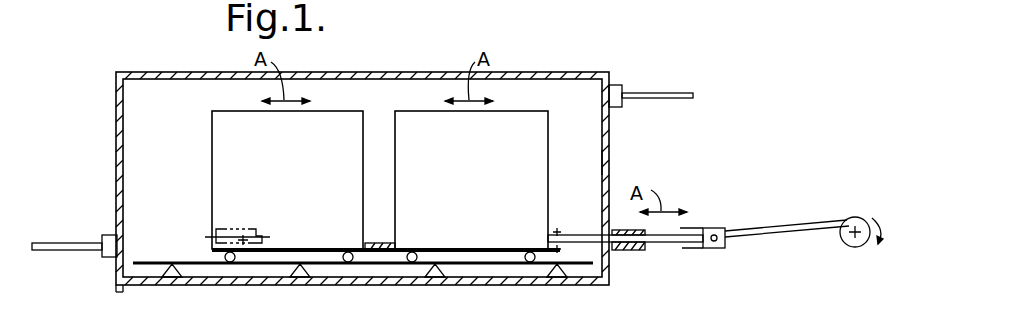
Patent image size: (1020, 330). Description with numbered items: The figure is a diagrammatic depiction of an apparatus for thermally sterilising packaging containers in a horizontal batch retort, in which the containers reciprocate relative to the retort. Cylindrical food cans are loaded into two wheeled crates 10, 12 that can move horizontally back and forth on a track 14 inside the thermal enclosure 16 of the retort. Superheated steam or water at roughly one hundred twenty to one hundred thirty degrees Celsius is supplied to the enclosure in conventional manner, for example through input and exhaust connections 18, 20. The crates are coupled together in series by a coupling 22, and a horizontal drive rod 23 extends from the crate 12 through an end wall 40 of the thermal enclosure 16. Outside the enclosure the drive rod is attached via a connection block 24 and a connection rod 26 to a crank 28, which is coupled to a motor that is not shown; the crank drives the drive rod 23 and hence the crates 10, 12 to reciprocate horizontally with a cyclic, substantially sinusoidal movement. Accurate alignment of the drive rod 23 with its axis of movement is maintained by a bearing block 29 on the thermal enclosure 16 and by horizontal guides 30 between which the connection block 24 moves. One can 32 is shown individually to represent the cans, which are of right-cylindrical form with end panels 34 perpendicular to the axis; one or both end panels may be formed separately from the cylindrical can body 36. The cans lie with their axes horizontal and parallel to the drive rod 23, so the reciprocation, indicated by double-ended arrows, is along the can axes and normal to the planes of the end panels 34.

The wheeled crate 10 is at (302, 166).
The wheeled crate 12 is at (484, 166).
The track 14 is at (387, 266).
The thermal enclosure 16 is at (143, 70).
The input connection 18 is at (95, 250).
The exhaust connection 20 is at (660, 92).
The coupling 22 is at (393, 243).
The drive rod 23 is at (668, 244).
The connection block 24 is at (718, 250).
The connection rod 26 is at (807, 221).
The crank 28 is at (858, 248).
The bearing block 29 is at (633, 252).
The horizontal guides 30 is at (729, 227).
The can 32 is at (246, 252).
The end panels 34 is at (216, 229).
The can body 36 is at (243, 228).
The end wall 40 is at (610, 165).